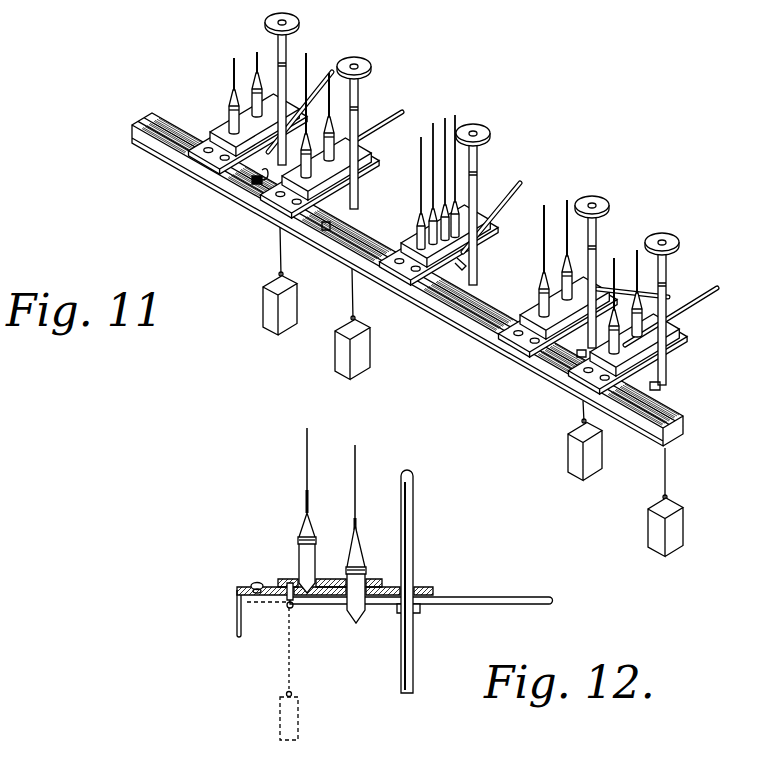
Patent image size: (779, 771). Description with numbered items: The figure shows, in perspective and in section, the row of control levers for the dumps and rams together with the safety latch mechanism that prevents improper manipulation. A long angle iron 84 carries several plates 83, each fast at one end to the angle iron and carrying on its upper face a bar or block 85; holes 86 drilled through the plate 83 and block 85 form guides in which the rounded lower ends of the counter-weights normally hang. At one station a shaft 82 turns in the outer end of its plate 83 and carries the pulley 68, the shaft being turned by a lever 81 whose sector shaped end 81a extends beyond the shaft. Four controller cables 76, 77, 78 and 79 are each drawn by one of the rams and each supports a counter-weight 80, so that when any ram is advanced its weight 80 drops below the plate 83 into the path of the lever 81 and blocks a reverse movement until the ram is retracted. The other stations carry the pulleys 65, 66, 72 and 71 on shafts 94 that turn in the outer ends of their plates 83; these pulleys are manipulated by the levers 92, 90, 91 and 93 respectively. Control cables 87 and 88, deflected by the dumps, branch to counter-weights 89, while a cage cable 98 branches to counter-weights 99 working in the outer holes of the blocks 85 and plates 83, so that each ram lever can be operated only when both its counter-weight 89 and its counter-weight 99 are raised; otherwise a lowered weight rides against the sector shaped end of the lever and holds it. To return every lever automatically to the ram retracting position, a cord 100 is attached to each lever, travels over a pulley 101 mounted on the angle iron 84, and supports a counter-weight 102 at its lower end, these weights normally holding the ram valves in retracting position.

In FIG. 11, the pulley 65 is at (300, 22).
In FIG. 11, the pulley 66 is at (372, 65).
In FIG. 11, the pulley 68 is at (491, 132).
In FIG. 11, the pulley 71 is at (680, 242).
In FIG. 11, the pulley 72 is at (610, 205).
In FIG. 11, the controller cable 76 is at (456, 117).
In FIG. 11, the controller cable 77 is at (446, 121).
In FIG. 11, the controller cable 78 is at (434, 128).
In FIG. 11, the controller cable 79 is at (422, 137).
In FIG. 11, the counter-weight 80 is at (416, 236).
In FIG. 11, the lever 81 is at (521, 185).
In FIG. 11, the sector shaped end 81a is at (463, 269).
In FIG. 11, the shaft 82 is at (478, 182).
In FIG. 11, the plate 83 is at (364, 170).
In FIG. 12, the plate 83 is at (432, 592).
In FIG. 11, the angle iron 84 is at (460, 310).
In FIG. 12, the angle iron 84 is at (238, 615).
In FIG. 11, the bar or block 85 is at (478, 253).
In FIG. 12, the bar or block 85 is at (375, 577).
In FIG. 12, the holes 86 is at (290, 580).
In FIG. 11, the control cable 87 is at (309, 62).
In FIG. 12, the control cable 87 is at (309, 456).
In FIG. 11, the control cable 88 is at (233, 64).
In FIG. 11, the counter-weight 89 is at (230, 128).
In FIG. 12, the counter-weight 89 is at (300, 552).
In FIG. 11, the lever 90 is at (400, 118).
In FIG. 12, the lever 90 is at (472, 598).
In FIG. 11, the lever 91 is at (650, 298).
In FIG. 11, the lever 92 is at (325, 84).
In FIG. 11, the lever 93 is at (719, 297).
In FIG. 11, the shaft 94 is at (288, 50).
In FIG. 12, the shaft 94 is at (409, 556).
In FIG. 11, the cable 98 is at (332, 91).
In FIG. 12, the cable 98 is at (358, 488).
In FIG. 11, the counter-weight 99 is at (582, 282).
In FIG. 12, the counter-weight 99 is at (348, 577).
In FIG. 11, the cord 100 is at (279, 246).
In FIG. 12, the cord 100 is at (292, 673).
In FIG. 11, the pulley 101 is at (250, 181).
In FIG. 12, the pulley 101 is at (294, 618).
In FIG. 11, the counter-weight 102 is at (270, 302).
In FIG. 12, the counter-weight 102 is at (300, 723).